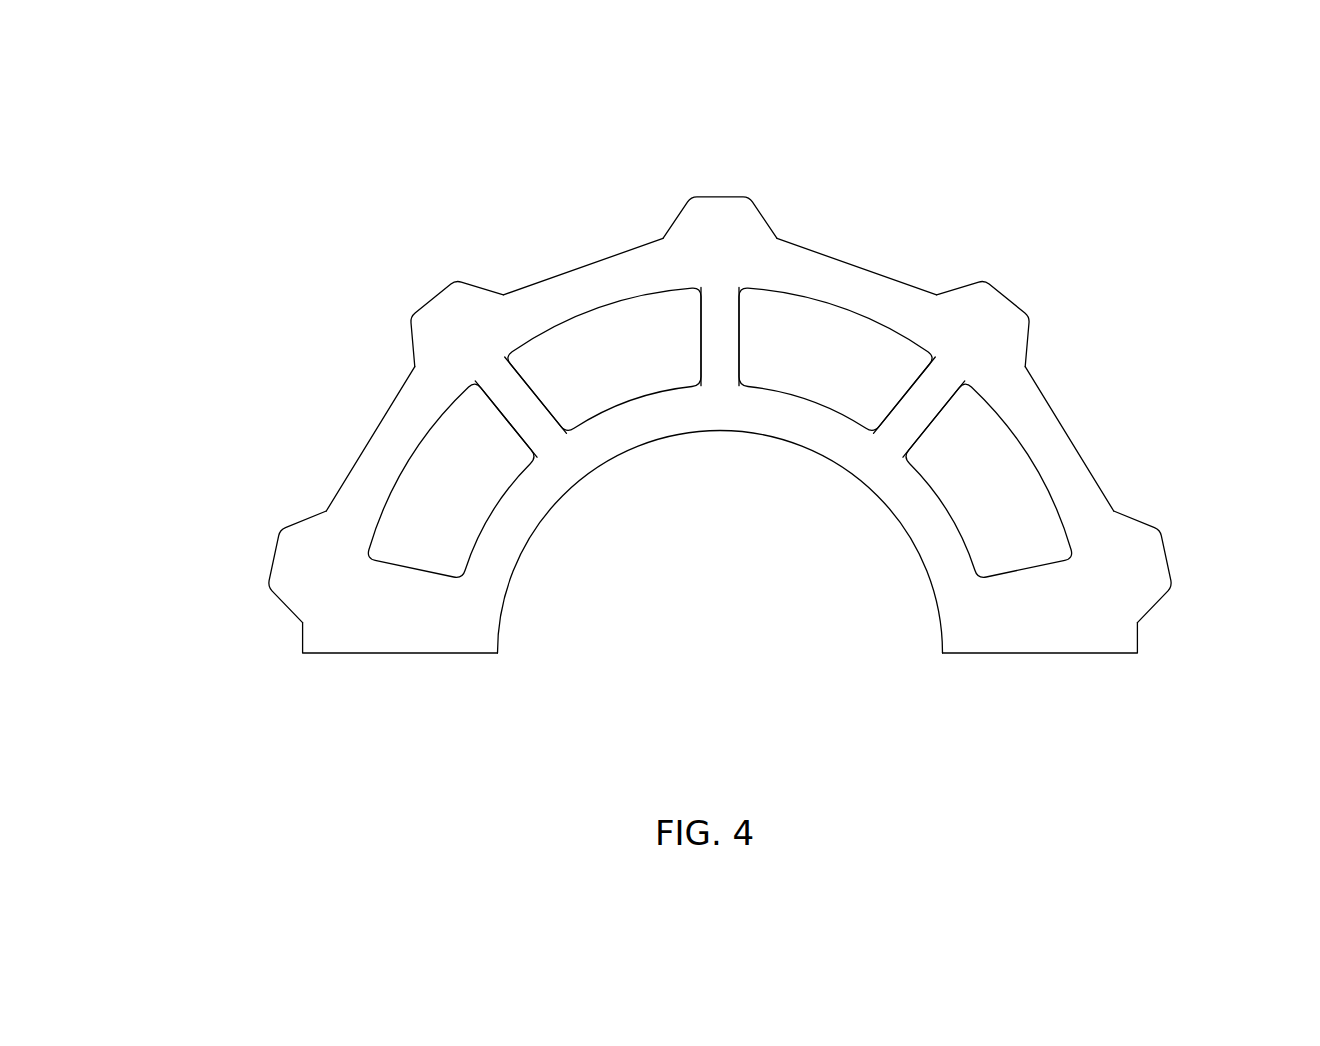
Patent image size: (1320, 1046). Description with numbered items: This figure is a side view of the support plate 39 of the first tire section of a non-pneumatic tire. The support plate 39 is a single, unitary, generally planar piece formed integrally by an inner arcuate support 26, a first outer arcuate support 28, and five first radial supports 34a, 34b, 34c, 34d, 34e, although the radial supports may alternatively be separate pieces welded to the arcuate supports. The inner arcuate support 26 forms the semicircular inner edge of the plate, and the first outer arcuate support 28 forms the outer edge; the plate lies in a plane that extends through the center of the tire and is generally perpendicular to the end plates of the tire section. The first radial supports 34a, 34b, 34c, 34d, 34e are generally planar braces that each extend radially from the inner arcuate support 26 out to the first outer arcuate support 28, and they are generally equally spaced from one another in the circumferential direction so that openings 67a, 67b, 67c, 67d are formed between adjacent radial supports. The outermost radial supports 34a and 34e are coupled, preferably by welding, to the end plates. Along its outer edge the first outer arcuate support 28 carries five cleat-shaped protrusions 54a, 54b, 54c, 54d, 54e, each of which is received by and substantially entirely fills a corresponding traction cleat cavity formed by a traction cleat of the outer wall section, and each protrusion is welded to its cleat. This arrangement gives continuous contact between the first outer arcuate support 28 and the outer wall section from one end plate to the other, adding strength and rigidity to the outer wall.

The inner arcuate support 26 is at (673, 422).
The first outer arcuate support 28 is at (832, 272).
The first radial support 34a is at (378, 634).
The first radial support 34b is at (520, 385).
The first radial support 34c is at (718, 320).
The first radial support 34d is at (932, 403).
The first radial support 34e is at (1075, 641).
The support plate 39 is at (700, 442).
The cleat-shaped protrusion 54a is at (283, 553).
The cleat-shaped protrusion 54b is at (430, 318).
The cleat-shaped protrusion 54c is at (723, 213).
The cleat-shaped protrusion 54d is at (1005, 302).
The cleat-shaped protrusion 54e is at (1157, 547).
The opening 67a is at (425, 470).
The opening 67b is at (618, 322).
The opening 67c is at (848, 320).
The opening 67d is at (1020, 447).